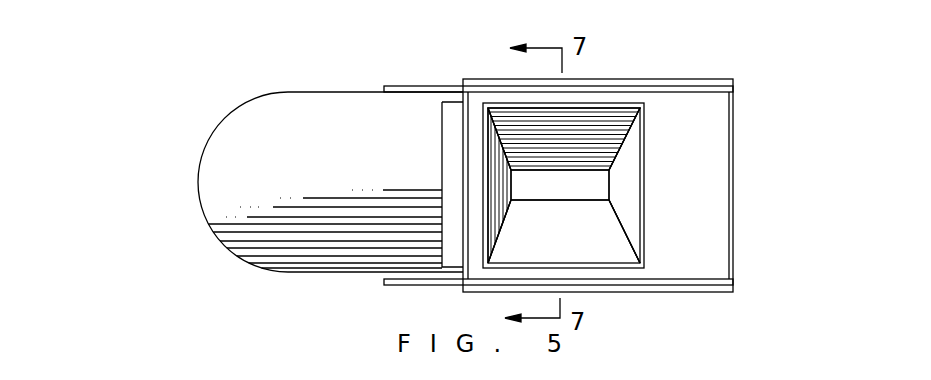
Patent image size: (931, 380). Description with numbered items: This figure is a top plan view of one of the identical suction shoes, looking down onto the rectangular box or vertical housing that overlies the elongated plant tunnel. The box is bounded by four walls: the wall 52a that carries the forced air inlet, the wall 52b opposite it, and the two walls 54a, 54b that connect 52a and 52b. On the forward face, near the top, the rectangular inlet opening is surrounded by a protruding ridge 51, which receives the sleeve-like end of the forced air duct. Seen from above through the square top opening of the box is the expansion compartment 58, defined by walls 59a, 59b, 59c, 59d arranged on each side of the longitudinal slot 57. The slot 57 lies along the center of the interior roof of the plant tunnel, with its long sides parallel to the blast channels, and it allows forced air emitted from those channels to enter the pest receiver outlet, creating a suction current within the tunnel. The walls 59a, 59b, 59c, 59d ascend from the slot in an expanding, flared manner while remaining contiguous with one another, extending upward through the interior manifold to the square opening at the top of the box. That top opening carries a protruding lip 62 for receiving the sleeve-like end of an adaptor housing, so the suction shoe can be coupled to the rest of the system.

The protruding ridge 51 is at (452, 107).
The wall 52a is at (463, 155).
The wall 52b is at (733, 200).
The wall 54a is at (670, 290).
The wall 54b is at (657, 86).
The longitudinal slot 57 is at (555, 189).
The expansion compartment 58 is at (601, 216).
The wall 59a is at (611, 258).
The wall 59b is at (500, 193).
The wall 59c is at (593, 136).
The wall 59d is at (630, 162).
The protruding lip 62 is at (645, 132).